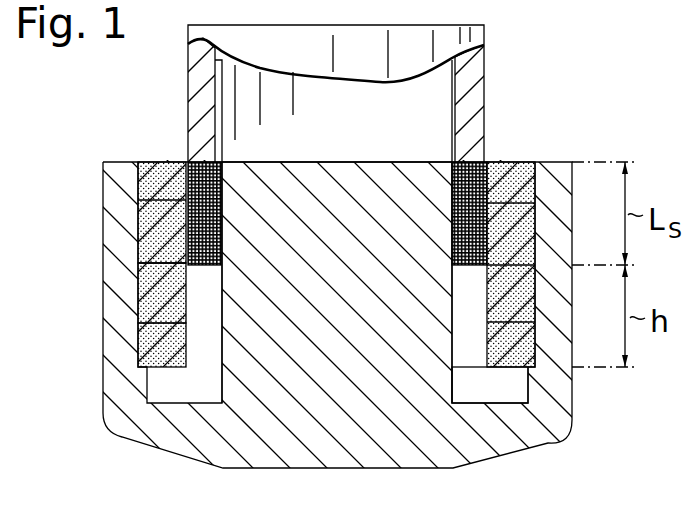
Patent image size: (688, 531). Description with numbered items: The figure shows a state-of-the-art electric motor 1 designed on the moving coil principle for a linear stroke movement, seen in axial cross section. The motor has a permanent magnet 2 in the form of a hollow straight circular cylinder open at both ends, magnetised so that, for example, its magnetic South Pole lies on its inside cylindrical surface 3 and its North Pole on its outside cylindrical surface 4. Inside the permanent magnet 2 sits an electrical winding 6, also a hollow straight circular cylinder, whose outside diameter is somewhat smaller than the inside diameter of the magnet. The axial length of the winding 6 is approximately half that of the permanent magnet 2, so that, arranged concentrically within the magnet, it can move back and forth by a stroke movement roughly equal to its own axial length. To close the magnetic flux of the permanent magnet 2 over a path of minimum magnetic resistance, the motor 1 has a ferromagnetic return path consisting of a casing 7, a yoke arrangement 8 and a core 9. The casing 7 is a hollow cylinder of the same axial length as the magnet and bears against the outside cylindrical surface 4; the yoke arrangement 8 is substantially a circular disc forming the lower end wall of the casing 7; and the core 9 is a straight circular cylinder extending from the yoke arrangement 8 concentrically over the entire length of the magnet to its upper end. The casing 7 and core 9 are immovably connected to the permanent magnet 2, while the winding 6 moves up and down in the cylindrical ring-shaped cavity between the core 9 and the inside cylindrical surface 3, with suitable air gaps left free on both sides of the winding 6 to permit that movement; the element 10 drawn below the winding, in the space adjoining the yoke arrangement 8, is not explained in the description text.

The electric motor 1 is at (536, 135).
The permanent magnet 2 is at (137, 184).
The inside cylindrical surface 3 is at (187, 296).
The outside cylindrical surface 4 is at (136, 345).
The electrical winding 6 is at (472, 276).
The casing 7 is at (117, 243).
The yoke arrangement 8 is at (458, 435).
The core 9 is at (351, 183).
The recess 10 is at (474, 347).